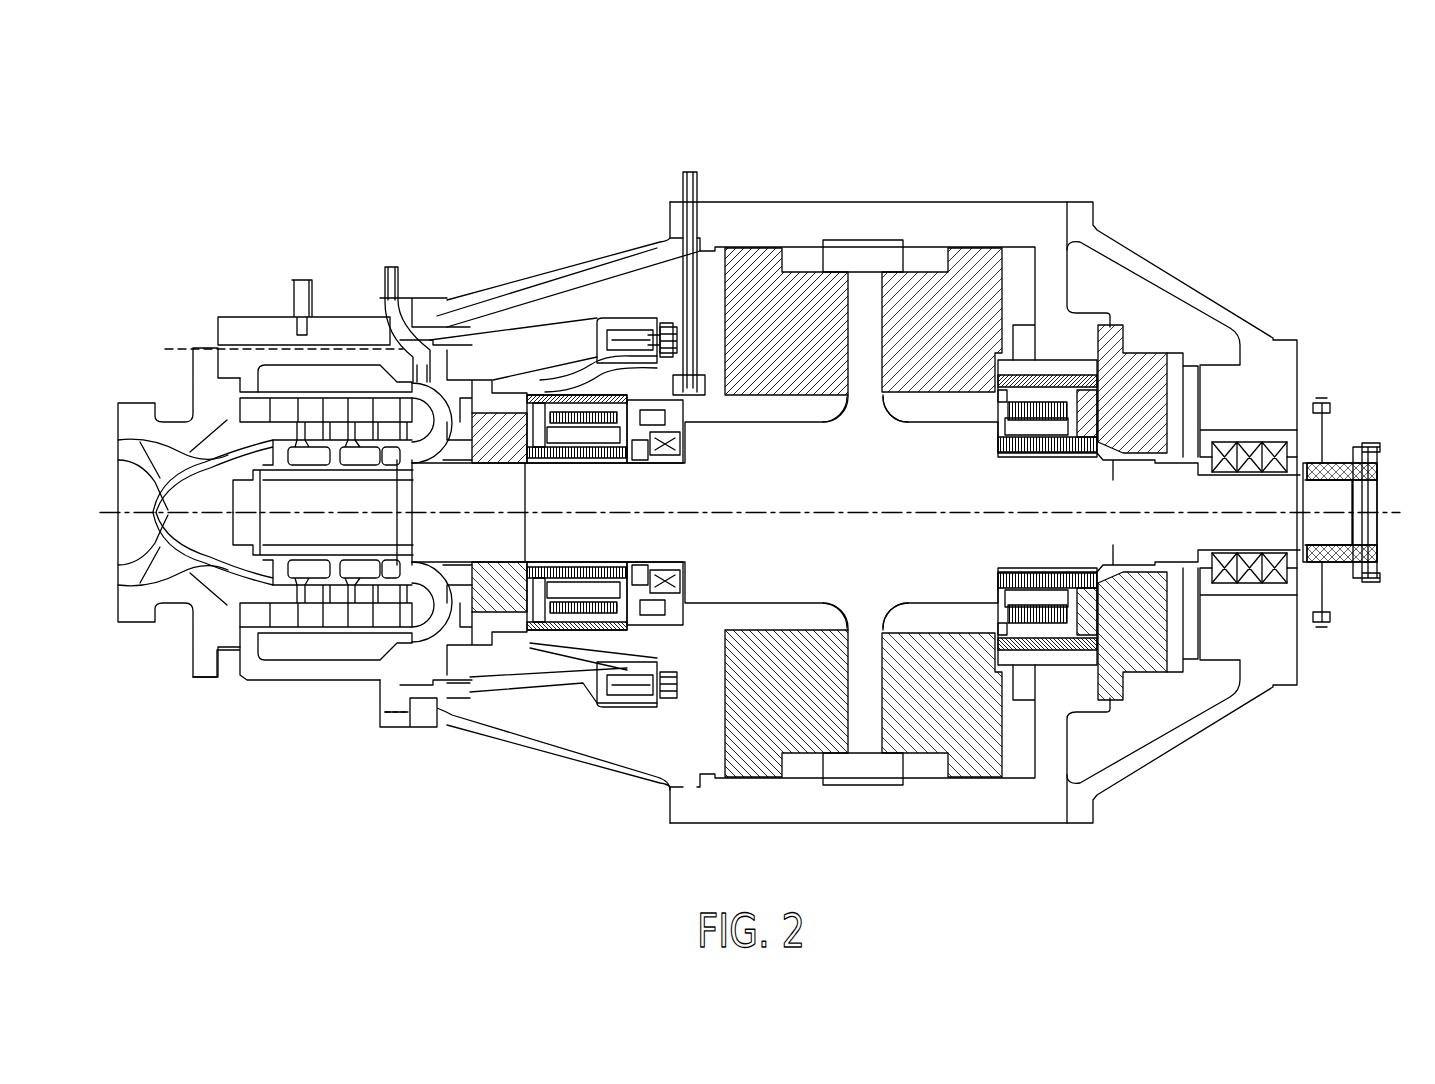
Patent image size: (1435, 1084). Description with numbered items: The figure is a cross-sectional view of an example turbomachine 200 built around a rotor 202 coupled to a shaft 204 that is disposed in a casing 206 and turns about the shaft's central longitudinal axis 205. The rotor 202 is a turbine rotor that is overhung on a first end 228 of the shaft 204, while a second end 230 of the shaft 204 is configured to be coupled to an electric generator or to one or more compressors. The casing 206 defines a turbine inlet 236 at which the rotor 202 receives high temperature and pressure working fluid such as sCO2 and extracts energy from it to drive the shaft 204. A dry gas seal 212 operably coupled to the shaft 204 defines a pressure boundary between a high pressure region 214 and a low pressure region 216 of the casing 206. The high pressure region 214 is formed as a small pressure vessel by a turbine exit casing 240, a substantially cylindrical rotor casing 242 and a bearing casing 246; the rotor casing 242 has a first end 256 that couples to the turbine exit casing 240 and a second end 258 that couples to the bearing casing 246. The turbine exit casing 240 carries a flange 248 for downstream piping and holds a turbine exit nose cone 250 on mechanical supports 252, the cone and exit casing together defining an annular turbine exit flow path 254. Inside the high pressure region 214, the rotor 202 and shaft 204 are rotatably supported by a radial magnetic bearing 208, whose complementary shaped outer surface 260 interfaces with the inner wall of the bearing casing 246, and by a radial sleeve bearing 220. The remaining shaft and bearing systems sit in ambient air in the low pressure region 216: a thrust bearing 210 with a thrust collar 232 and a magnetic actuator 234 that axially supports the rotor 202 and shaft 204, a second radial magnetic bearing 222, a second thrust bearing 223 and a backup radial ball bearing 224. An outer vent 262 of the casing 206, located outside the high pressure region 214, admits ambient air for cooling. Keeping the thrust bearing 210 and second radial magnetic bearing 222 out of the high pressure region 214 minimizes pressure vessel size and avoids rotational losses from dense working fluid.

The turbomachine 200 is at (266, 128).
The rotor 202 is at (300, 385).
The shaft 204 is at (600, 501).
The central longitudinal axis 205 is at (752, 518).
The casing 206 is at (333, 290).
The radial magnetic bearing 208 is at (566, 377).
The thrust bearing 210 is at (858, 184).
The dry gas seal 212 is at (690, 427).
The high pressure region 214 is at (468, 358).
The low pressure region 216 is at (706, 302).
The radial sleeve bearing 220 is at (500, 400).
The second radial magnetic bearing 222 is at (1045, 367).
The second thrust bearing 223 is at (1175, 345).
The backup radial ball bearing 224 is at (1260, 420).
The first end 228 is at (178, 475).
The second end 230 is at (1362, 497).
The thrust collar 232 is at (862, 300).
The magnetic actuator 234 is at (965, 288).
The turbine inlet 236 is at (412, 375).
The turbine exit casing 240 is at (163, 378).
The rotor casing 242 is at (280, 323).
The bearing casing 246 is at (526, 385).
The flange 248 is at (137, 410).
The turbine exit nose cone 250 is at (158, 520).
The mechanical supports 252 is at (180, 455).
The annular turbine exit flow path 254 is at (138, 500).
The first end 256 is at (228, 350).
The second end 258 is at (625, 292).
The outer surface 260 is at (540, 630).
The outer vent 262 is at (575, 765).